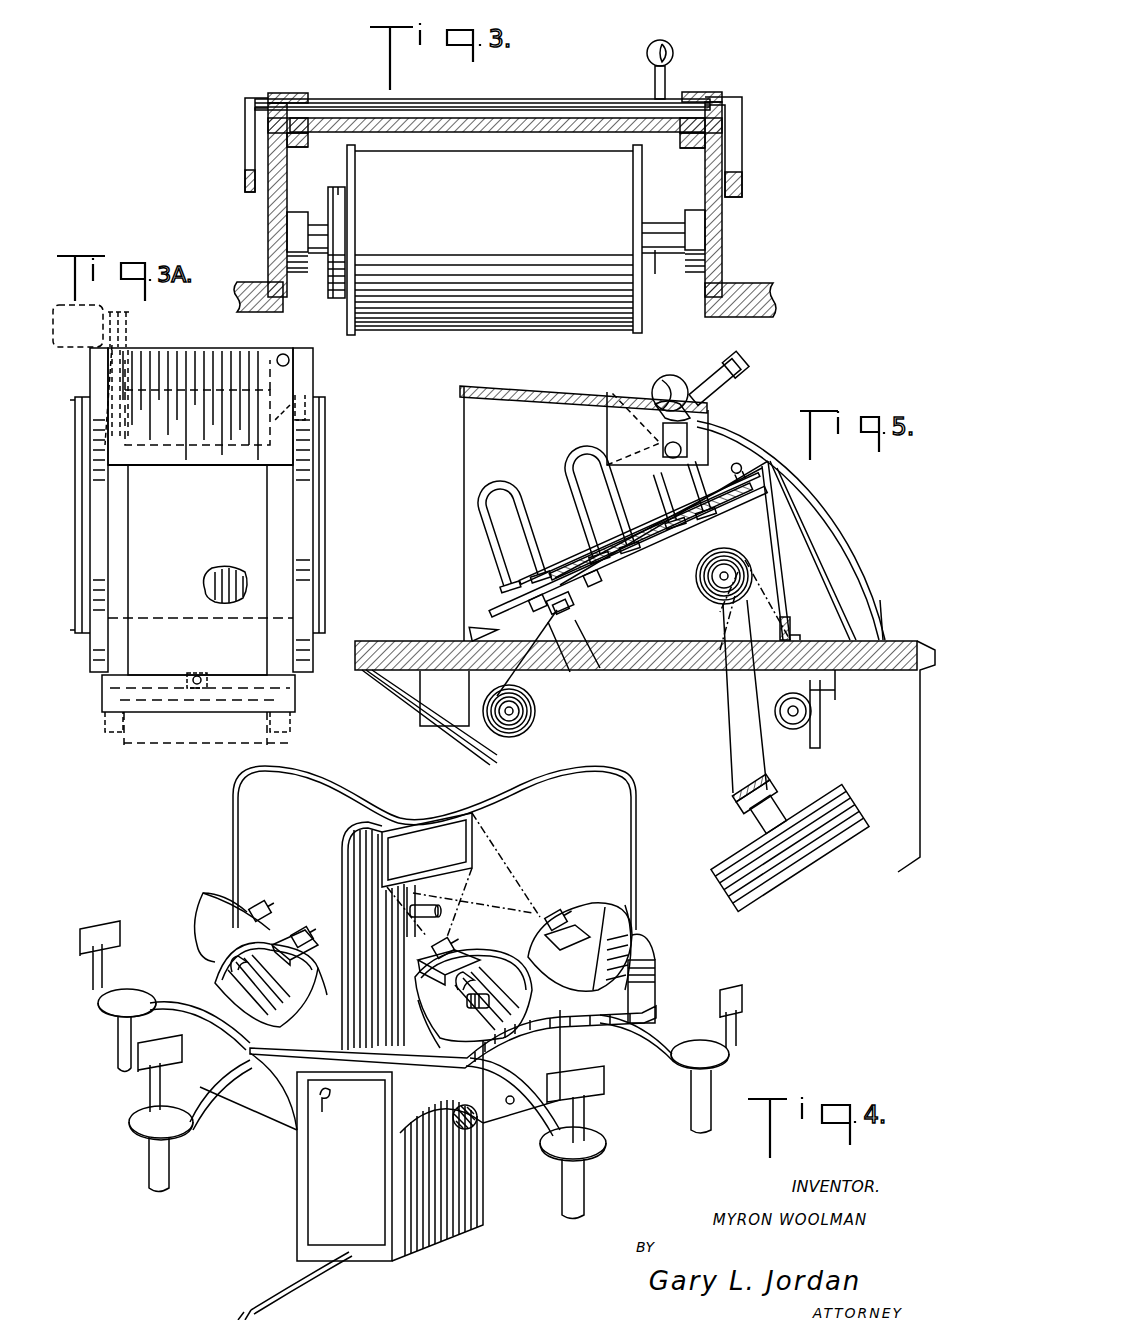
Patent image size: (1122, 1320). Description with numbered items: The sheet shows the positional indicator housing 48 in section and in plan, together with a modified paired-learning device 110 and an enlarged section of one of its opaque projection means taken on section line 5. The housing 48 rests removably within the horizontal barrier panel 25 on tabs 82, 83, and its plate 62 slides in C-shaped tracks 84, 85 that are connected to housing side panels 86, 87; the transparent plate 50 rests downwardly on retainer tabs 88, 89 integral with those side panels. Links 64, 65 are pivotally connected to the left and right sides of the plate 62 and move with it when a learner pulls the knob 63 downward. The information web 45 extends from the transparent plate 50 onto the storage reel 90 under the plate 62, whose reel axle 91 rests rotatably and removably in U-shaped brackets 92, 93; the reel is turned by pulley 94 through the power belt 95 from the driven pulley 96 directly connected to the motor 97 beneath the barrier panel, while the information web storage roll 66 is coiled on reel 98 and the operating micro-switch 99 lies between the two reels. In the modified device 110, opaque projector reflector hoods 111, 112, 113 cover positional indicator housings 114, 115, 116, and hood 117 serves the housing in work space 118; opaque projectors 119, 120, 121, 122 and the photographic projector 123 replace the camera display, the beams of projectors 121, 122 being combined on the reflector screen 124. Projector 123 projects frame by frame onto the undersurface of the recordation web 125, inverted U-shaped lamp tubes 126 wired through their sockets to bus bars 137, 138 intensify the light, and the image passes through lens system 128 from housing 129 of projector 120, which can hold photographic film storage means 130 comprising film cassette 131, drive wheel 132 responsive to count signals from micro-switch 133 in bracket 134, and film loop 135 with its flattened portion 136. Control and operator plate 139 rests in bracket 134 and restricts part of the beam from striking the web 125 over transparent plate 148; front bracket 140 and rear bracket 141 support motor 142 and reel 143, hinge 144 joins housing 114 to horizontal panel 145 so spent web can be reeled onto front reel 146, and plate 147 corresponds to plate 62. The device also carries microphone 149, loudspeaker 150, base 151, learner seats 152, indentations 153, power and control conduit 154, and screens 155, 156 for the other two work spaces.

In FIG. 4, the section line 5 is at (313, 932).
In FIG. 3, the horizontal barrier panel 25 is at (252, 281).
In FIG. 3, the information web 45 is at (482, 140).
In FIG. 3A, the information web 45 is at (186, 502).
In FIG. 3, the positional indicator housing 48 is at (728, 237).
In FIG. 3, the transparent plate 50 is at (540, 133).
In FIG. 3A, the transparent plate 50 is at (207, 594).
In FIG. 3, the plate 62 is at (585, 104).
In FIG. 3A, the plate 62 is at (213, 358).
In FIG. 3, the knob 63 is at (670, 45).
In FIG. 3A, the knob 63 is at (290, 360).
In FIG. 3, the link 64 is at (245, 166).
In FIG. 3A, the link 64 is at (78, 512).
In FIG. 3, the link 65 is at (735, 154).
In FIG. 3A, the link 65 is at (320, 500).
In FIG. 3A, the information web storage roll 66 is at (145, 745).
In FIG. 3, the tab 82 is at (705, 308).
In FIG. 3, the tab 83 is at (283, 298).
In FIG. 3, the C-shaped track 84 is at (715, 92).
In FIG. 3A, the C-shaped track 84 is at (280, 532).
In FIG. 3, the C-shaped track 85 is at (282, 92).
In FIG. 3A, the C-shaped track 85 is at (93, 672).
In FIG. 3, the housing side panel 86 is at (715, 127).
In FIG. 3, the housing side panel 87 is at (282, 156).
In FIG. 3, the retainer tab 88 is at (690, 148).
In FIG. 3, the retainer tab 89 is at (298, 150).
In FIG. 3, the storage reel 90 is at (625, 308).
In FIG. 3A, the storage reel 90 is at (135, 445).
In FIG. 3, the reel axle 91 is at (667, 276).
In FIG. 3A, the reel axle 91 is at (312, 392).
In FIG. 3, the U-shaped bracket 92 is at (697, 214).
In FIG. 3, the U-shaped bracket 93 is at (290, 214).
In FIG. 3, the pulley 94 is at (336, 216).
In FIG. 3, the power belt 95 is at (335, 186).
In FIG. 3A, the power belt 95 is at (125, 342).
In FIG. 3A, the driven pulley 96 is at (130, 314).
In FIG. 3A, the motor 97 is at (78, 338).
In FIG. 3A, the reel 98 is at (214, 733).
In FIG. 3A, the operating micro-switch 99 is at (187, 673).
In FIG. 4, the modified device 110 is at (228, 855).
In FIG. 4, the opaque projector reflector hood 111 is at (325, 1030).
In FIG. 4, the opaque projector reflector hood 112 is at (412, 1054).
In FIG. 4, the opaque projector reflector hood 113 is at (592, 906).
In FIG. 5, the positional indicator housing 114 is at (782, 565).
In FIG. 4, the positional indicator housing 114 is at (260, 1025).
In FIG. 4, the positional indicator housing 115 is at (410, 1040).
In FIG. 4, the positional indicator housing 116 is at (650, 950).
In FIG. 5, the opaque projector reflector hood 117 is at (478, 420).
In FIG. 4, the opaque projector reflector hood 117 is at (228, 905).
In FIG. 4, the work space 118 is at (265, 808).
In FIG. 4, the opaque projector 119 is at (259, 900).
In FIG. 5, the opaque projector 120 is at (760, 379).
In FIG. 4, the opaque projector 120 is at (297, 928).
In FIG. 4, the opaque projector 121 is at (460, 946).
In FIG. 4, the opaque projector 122 is at (563, 904).
In FIG. 5, the projector 123 is at (742, 856).
In FIG. 4, the reflector screen 124 is at (416, 856).
In FIG. 5, the recordation web 125 is at (530, 660).
In FIG. 4, the recordation web 125 is at (430, 1125).
In FIG. 5, the inverted U-shaped lamp tube 126 is at (560, 465).
In FIG. 5, the lens system 128 is at (740, 372).
In FIG. 5, the housing 129 is at (625, 400).
In FIG. 4, the housing 129 is at (300, 990).
In FIG. 5, the photographic film storage means 130 is at (725, 432).
In FIG. 5, the film cassette 131 is at (690, 452).
In FIG. 5, the drive wheel 132 is at (720, 405).
In FIG. 5, the micro-switch 133 is at (583, 646).
In FIG. 5, the bracket 134 is at (561, 653).
In FIG. 5, the film loop 135 is at (672, 376).
In FIG. 5, the flattened portion 136 is at (607, 427).
In FIG. 5, the bus bar 137 is at (835, 600).
In FIG. 5, the bus bar 138 is at (846, 632).
In FIG. 5, the control and operator plate 139 is at (590, 608).
In FIG. 5, the front bracket 140 is at (822, 736).
In FIG. 5, the rear bracket 141 is at (465, 700).
In FIG. 5, the motor 142 is at (775, 716).
In FIG. 5, the reel 143 is at (525, 722).
In FIG. 5, the hinge 144 is at (794, 638).
In FIG. 5, the horizontal panel 145 is at (398, 641).
In FIG. 4, the horizontal panel 145 is at (642, 995).
In FIG. 5, the front reel 146 is at (710, 592).
In FIG. 5, the plate 147 is at (718, 522).
In FIG. 4, the transparent plate 148 is at (490, 1001).
In FIG. 4, the audio pickup microphone 149 is at (457, 877).
In FIG. 4, the loudspeaker 150 is at (465, 1130).
In FIG. 4, the base 151 is at (300, 1147).
In FIG. 4, the learner seat 152 is at (118, 1043).
In FIG. 4, the indentation 153 is at (188, 968).
In FIG. 4, the power and control conduit 154 is at (290, 1282).
In FIG. 4, the screen 155 is at (356, 812).
In FIG. 4, the screen 156 is at (413, 802).